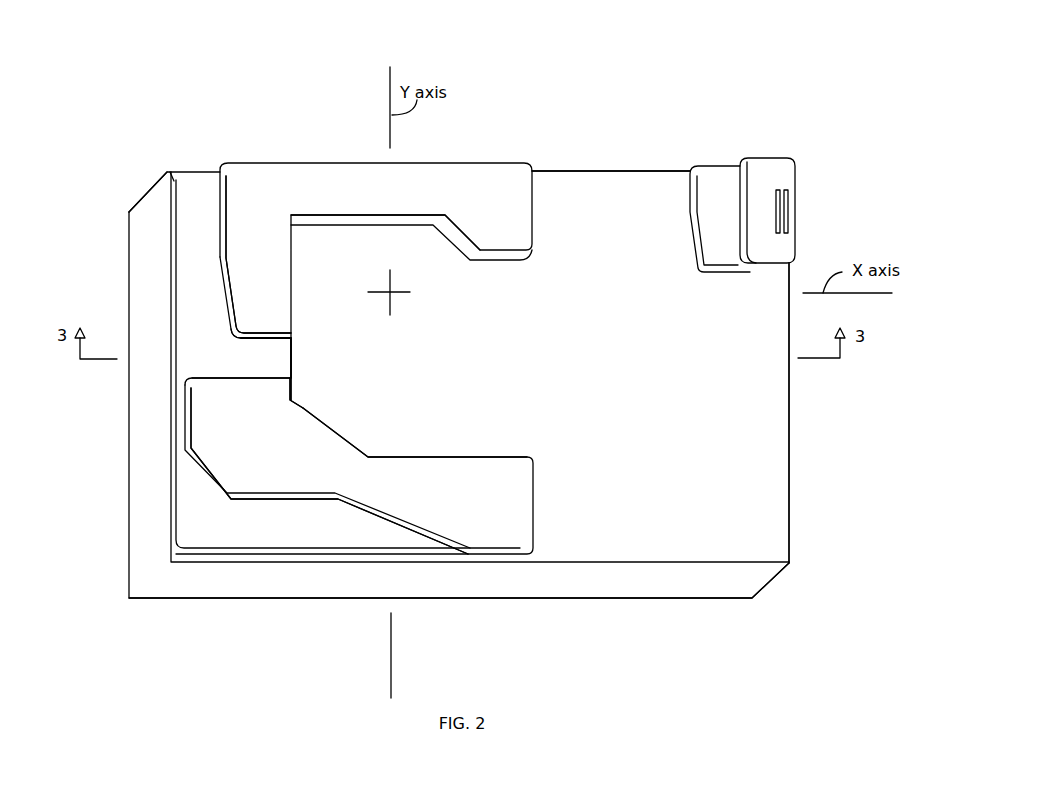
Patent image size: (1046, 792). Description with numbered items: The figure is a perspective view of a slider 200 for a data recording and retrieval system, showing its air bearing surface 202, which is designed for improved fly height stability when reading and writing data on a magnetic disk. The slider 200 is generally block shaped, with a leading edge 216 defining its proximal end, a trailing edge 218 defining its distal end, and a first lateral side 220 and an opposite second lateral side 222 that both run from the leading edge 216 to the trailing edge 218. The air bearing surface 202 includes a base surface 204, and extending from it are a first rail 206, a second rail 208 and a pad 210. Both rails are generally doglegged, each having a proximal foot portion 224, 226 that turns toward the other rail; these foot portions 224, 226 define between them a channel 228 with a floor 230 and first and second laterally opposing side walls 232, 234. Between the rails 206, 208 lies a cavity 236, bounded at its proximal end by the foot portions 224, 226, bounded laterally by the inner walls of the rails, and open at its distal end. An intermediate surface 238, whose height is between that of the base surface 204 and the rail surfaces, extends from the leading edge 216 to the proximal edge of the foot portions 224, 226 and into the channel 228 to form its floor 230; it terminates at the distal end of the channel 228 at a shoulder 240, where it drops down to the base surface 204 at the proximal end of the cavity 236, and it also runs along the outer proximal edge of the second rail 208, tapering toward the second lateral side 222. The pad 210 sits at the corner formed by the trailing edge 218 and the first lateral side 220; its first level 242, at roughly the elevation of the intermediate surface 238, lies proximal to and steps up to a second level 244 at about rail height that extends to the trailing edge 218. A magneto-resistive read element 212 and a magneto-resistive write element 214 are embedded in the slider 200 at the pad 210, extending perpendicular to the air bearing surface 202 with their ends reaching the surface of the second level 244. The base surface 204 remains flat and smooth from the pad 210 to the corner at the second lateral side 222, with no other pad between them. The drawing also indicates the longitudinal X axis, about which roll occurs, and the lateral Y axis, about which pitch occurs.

The slider 200 is at (689, 63).
The air bearing surface 202 is at (459, 385).
The base surface 204 is at (433, 359).
The first rail 206 is at (403, 205).
The second rail 208 is at (367, 472).
The pad 210 is at (772, 228).
The magneto-resistive read element 212 is at (777, 234).
The magneto-resistive write element 214 is at (787, 236).
The leading edge 216 is at (150, 238).
The trailing edge 218 is at (790, 422).
The first lateral side 220 is at (557, 170).
The second lateral side 222 is at (522, 582).
The proximal foot portion of first rail 224 is at (277, 275).
The proximal foot portion of second rail 226 is at (283, 410).
The channel 228 is at (230, 355).
The floor 230 is at (241, 358).
The first side wall 232 is at (268, 338).
The second side wall 234 is at (277, 373).
The cavity 236 is at (344, 471).
The intermediate surface 238 is at (238, 254).
The shoulder 240 is at (293, 360).
The first level 242 is at (710, 188).
The second level 244 is at (748, 218).